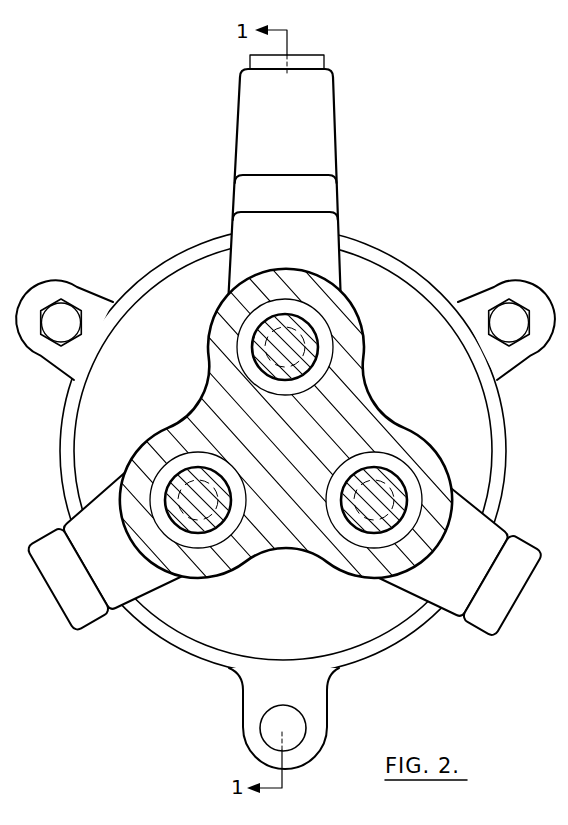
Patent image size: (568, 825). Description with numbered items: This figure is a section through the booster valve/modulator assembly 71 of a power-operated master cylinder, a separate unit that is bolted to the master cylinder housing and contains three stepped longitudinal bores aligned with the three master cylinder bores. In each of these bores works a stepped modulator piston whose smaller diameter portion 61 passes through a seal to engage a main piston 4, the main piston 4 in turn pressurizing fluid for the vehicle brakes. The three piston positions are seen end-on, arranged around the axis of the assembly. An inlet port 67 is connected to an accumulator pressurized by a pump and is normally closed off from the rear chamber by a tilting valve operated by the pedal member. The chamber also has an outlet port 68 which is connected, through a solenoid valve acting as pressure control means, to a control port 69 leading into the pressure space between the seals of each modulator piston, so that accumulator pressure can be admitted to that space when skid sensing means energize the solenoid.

The main piston 4 is at (258, 357).
The smaller diameter portion 61 is at (243, 310).
The inlet port 67 is at (318, 104).
The outlet port 68 is at (318, 200).
The control port 69 is at (313, 237).
The booster valve/modulator assembly 71 is at (430, 270).